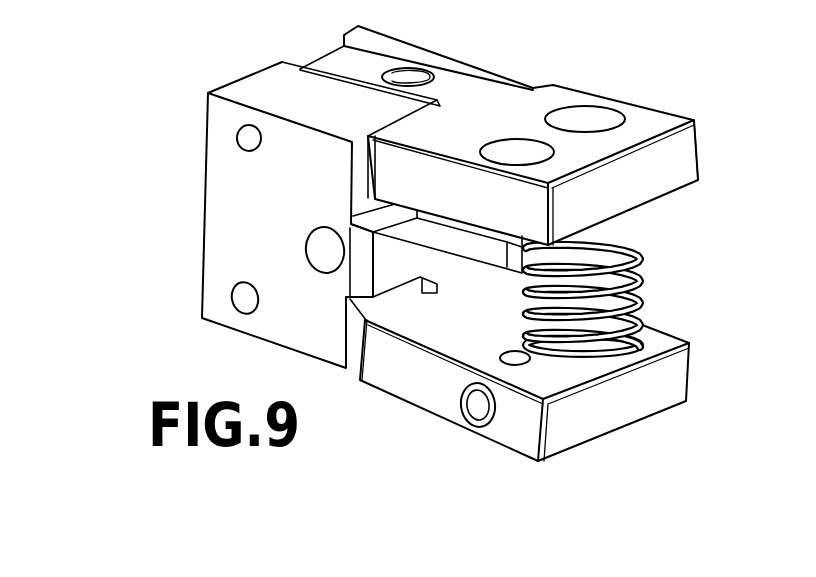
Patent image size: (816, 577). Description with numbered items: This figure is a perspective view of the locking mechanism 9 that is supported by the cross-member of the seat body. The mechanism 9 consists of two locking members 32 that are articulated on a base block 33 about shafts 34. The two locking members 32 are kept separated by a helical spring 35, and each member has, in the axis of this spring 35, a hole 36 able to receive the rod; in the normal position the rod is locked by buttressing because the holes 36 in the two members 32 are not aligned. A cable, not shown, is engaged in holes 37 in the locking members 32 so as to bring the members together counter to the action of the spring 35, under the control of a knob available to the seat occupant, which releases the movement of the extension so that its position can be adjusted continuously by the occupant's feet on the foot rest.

The locking mechanism 9 is at (128, 170).
The locking members 32 is at (421, 380).
The base block 33 is at (227, 190).
The shafts 34 is at (250, 134).
The helical spring 35 is at (646, 272).
The hole 36 is at (571, 107).
The holes 37 is at (517, 366).